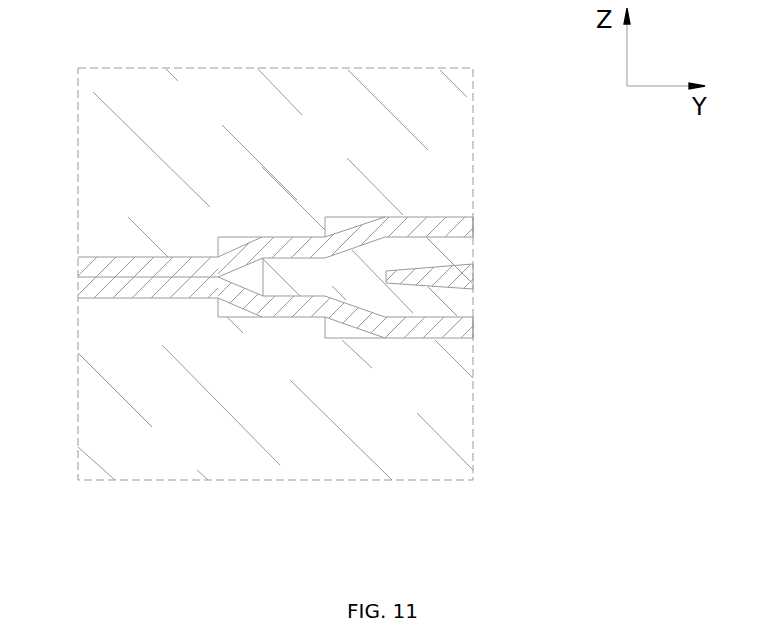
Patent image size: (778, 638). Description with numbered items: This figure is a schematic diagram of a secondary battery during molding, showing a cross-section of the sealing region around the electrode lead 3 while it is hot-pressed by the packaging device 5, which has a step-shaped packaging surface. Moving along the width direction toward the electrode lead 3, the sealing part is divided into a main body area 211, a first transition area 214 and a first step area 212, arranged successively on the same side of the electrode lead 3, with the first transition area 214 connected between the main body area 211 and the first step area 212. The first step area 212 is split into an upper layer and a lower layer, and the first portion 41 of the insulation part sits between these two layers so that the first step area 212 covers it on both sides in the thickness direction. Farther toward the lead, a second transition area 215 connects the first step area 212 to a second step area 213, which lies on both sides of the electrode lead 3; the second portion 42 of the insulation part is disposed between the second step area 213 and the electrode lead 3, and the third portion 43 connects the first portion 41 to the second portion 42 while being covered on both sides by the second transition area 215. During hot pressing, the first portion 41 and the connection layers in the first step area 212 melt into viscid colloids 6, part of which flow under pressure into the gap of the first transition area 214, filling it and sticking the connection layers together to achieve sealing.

The packaging device 5 is at (133, 93).
The colloids 6 is at (250, 268).
The main body area 211 is at (98, 298).
The first step area 212 is at (293, 247).
The first transition area 214 is at (243, 317).
The second transition area 215 is at (360, 234).
The second step area 213 is at (467, 223).
The electrode lead 3 is at (468, 278).
The first portion 41 is at (280, 297).
The second portion 42 is at (465, 300).
The third portion 43 is at (365, 295).